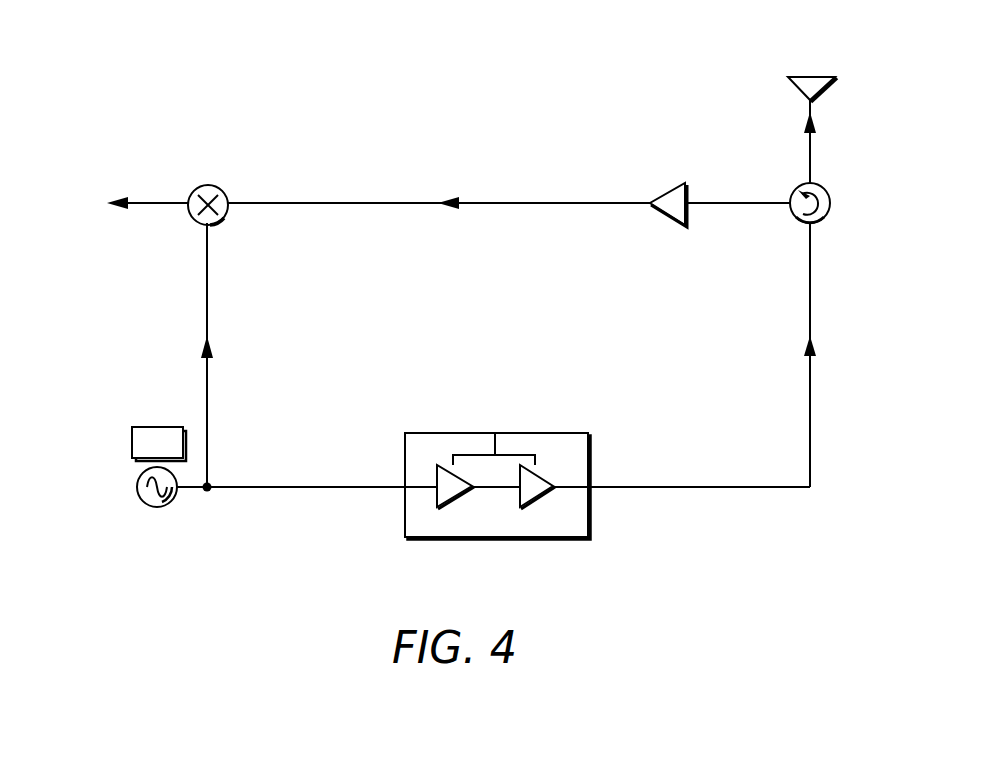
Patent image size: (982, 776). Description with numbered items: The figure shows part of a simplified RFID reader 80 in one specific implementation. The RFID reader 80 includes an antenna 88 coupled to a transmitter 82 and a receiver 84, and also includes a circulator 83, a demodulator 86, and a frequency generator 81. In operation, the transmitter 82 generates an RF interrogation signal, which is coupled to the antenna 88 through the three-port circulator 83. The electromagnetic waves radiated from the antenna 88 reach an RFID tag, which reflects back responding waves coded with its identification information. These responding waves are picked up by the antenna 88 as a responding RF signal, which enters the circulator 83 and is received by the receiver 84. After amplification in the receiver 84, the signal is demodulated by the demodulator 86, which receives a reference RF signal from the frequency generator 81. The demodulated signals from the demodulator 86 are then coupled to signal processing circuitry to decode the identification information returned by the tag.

The RFID reader 80 is at (760, 52).
The frequency generator 81 is at (136, 486).
The transmitter 82 is at (567, 538).
The circulator 83 is at (832, 203).
The receiver 84 is at (670, 186).
The demodulator 86 is at (199, 187).
The antenna 88 is at (829, 90).